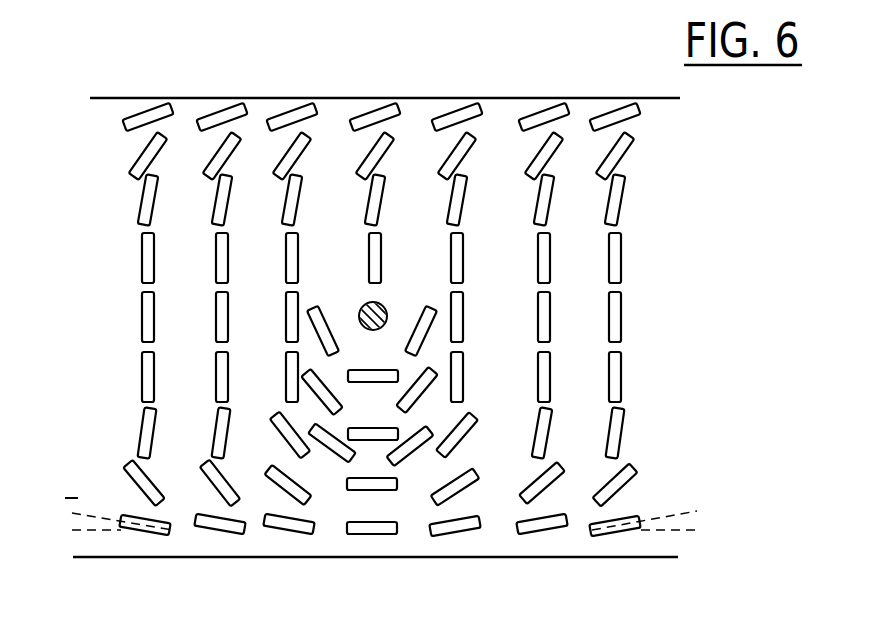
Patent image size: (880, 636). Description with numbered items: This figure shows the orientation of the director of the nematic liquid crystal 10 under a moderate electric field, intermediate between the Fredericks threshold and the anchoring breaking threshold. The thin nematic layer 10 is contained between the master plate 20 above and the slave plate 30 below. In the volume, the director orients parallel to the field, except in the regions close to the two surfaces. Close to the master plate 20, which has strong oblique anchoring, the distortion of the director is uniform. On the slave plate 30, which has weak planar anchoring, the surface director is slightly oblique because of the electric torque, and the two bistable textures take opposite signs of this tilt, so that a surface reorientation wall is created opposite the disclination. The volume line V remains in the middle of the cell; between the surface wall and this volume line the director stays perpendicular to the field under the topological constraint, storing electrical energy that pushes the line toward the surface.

The nematic liquid crystal layer 10 is at (107, 288).
The master plate 20 is at (128, 98).
The slave plate 30 is at (108, 557).